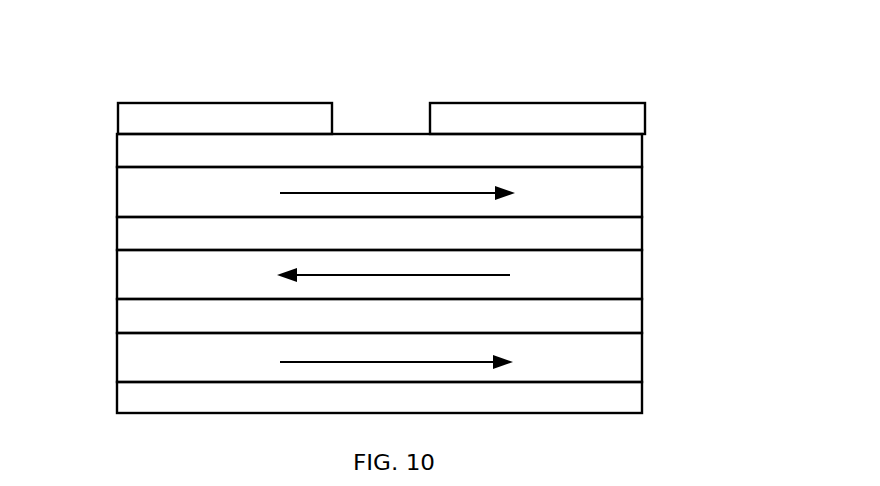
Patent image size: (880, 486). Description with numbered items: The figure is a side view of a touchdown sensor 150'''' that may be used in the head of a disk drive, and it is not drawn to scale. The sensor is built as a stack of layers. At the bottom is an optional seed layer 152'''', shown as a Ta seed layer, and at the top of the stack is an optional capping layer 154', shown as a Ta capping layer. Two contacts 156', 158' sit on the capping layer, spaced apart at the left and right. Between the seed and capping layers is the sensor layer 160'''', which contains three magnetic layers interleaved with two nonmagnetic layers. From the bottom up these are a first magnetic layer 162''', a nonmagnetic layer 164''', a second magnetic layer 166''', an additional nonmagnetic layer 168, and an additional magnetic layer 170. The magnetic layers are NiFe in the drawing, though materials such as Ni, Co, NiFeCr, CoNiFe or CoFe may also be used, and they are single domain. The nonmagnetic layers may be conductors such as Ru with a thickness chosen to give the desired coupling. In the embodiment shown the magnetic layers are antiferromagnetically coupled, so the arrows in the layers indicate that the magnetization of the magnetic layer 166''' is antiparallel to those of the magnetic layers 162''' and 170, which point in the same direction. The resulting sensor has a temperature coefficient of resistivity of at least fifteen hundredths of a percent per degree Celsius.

The touchdown sensor 150'''' is at (415, 224).
The seed layer 152'''' is at (334, 386).
The capping layer 154' is at (337, 157).
The contact 156' is at (197, 103).
The contact 158' is at (556, 103).
The sensor layer 160'''' is at (415, 270).
The magnetic layer 162''' is at (426, 351).
The nonmagnetic layer 164''' is at (334, 305).
The magnetic layer 166''' is at (425, 268).
The nonmagnetic layer 168 is at (117, 237).
The magnetic layer 170 is at (642, 200).